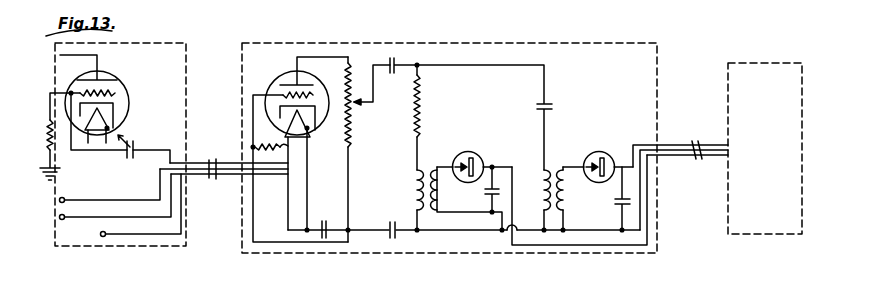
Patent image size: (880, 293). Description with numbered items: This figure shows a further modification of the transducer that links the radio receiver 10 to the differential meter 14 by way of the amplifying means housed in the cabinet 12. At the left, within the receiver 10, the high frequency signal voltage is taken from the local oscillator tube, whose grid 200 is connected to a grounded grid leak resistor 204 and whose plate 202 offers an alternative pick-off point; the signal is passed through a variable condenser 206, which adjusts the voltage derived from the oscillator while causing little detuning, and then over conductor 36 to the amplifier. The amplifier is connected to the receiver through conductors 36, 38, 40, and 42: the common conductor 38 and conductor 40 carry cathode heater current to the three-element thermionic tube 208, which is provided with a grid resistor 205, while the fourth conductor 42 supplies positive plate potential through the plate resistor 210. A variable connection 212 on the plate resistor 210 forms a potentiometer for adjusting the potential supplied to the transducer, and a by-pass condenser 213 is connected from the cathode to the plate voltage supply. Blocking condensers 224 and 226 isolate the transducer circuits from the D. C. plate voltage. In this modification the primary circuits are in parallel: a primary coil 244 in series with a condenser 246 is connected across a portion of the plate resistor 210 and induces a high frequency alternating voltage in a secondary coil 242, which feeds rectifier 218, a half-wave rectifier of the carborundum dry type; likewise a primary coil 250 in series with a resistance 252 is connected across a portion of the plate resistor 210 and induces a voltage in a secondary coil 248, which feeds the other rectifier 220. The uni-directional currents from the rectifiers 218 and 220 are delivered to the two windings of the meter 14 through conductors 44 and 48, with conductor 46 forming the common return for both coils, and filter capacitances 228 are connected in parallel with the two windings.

The radio receiver 10 is at (172, 81).
The cabinet 12 is at (505, 63).
The differential meter 14 is at (776, 224).
The conductor 36 is at (218, 160).
The common conductor 38 is at (212, 178).
The conductor 40 is at (234, 175).
The fourth conductor 42 is at (194, 182).
The conductor 44 is at (672, 143).
The conductor 46 is at (672, 153).
The conductor 48 is at (688, 158).
The grid 200 is at (117, 94).
The plate 202 is at (101, 80).
The grid leak resistor 204 is at (42, 118).
The grid resistor 205 is at (269, 155).
The variable condenser 206 is at (128, 157).
The three-element thermionic tube 208 is at (318, 132).
The plate resistor 210 is at (352, 143).
The variable connection 212 is at (374, 104).
The by-pass condenser 213 is at (322, 222).
The blocking condenser 224 is at (396, 56).
The blocking condenser 226 is at (393, 240).
The filter capacitances 228 is at (497, 186).
The secondary coil 242 is at (565, 200).
The primary coil 244 is at (514, 180).
The condenser 246 is at (552, 106).
The secondary coil 248 is at (442, 166).
The primary coil 250 is at (413, 195).
The resistance 252 is at (422, 108).
The rectifier 218 is at (592, 152).
The rectifier 220 is at (472, 150).